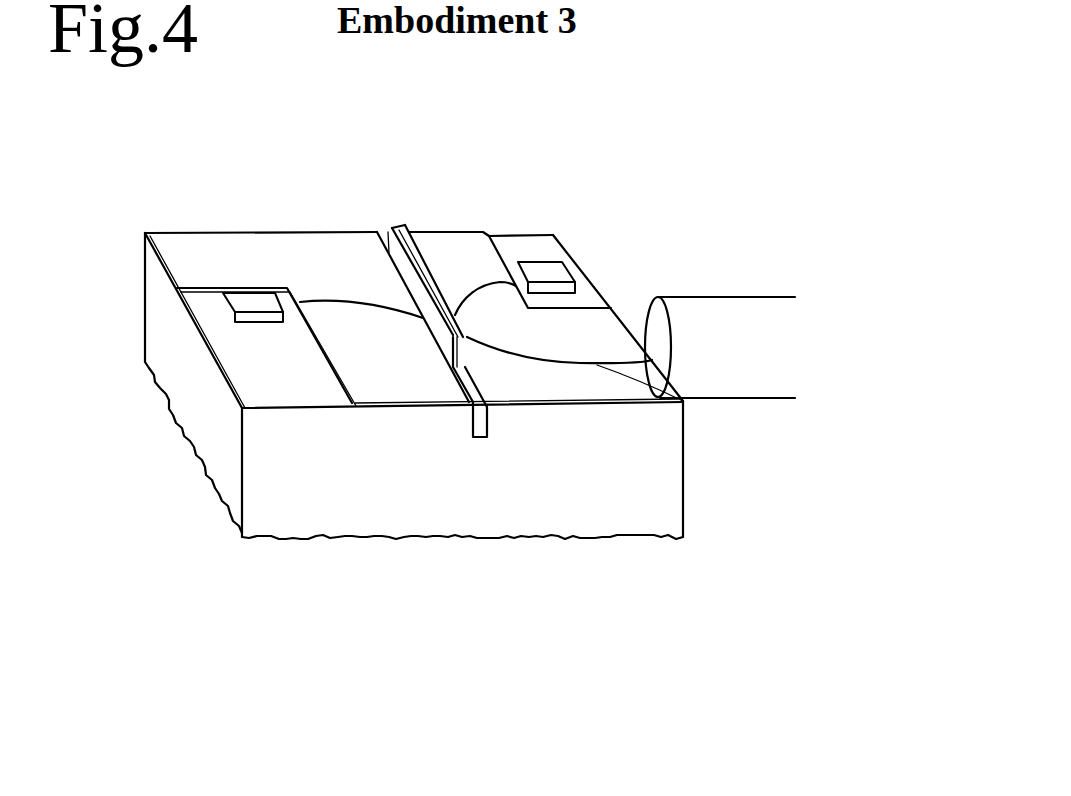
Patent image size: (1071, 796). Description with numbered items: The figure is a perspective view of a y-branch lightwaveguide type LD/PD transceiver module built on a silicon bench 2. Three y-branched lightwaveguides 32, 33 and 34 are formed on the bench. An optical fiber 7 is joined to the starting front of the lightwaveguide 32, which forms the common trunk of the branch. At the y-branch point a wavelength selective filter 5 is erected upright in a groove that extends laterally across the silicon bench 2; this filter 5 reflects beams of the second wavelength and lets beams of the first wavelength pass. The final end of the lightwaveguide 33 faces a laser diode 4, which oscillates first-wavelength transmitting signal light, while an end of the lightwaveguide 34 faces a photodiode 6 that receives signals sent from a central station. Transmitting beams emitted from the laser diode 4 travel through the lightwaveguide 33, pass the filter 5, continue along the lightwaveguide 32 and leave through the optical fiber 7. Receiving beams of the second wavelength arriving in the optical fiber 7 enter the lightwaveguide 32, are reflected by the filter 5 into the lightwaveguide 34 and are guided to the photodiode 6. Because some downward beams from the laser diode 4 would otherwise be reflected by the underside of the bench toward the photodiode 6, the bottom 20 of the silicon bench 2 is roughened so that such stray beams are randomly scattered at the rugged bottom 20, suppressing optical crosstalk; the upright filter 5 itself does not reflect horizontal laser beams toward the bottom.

The silicon bench 2 is at (312, 488).
The bottom 20 is at (473, 537).
The laser diode 4 is at (242, 300).
The wavelength selective filter 5 is at (399, 224).
The photodiode 6 is at (571, 258).
The optical fiber 7 is at (752, 331).
The lightwaveguide 32 is at (684, 403).
The lightwaveguide 33 is at (350, 302).
The lightwaveguide 34 is at (468, 290).